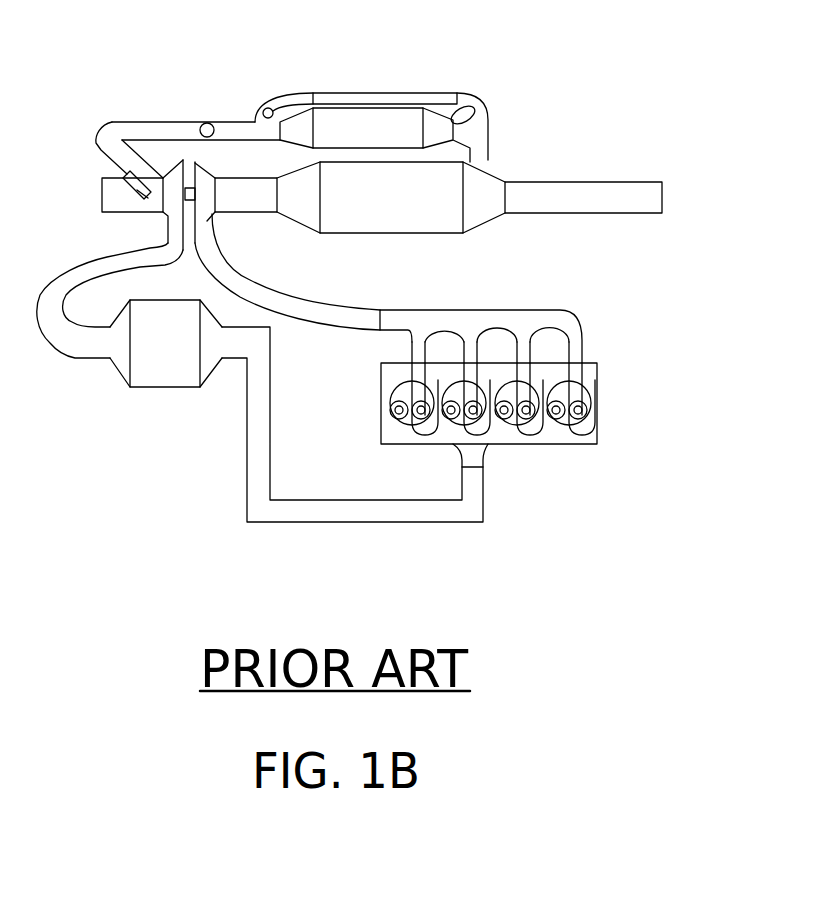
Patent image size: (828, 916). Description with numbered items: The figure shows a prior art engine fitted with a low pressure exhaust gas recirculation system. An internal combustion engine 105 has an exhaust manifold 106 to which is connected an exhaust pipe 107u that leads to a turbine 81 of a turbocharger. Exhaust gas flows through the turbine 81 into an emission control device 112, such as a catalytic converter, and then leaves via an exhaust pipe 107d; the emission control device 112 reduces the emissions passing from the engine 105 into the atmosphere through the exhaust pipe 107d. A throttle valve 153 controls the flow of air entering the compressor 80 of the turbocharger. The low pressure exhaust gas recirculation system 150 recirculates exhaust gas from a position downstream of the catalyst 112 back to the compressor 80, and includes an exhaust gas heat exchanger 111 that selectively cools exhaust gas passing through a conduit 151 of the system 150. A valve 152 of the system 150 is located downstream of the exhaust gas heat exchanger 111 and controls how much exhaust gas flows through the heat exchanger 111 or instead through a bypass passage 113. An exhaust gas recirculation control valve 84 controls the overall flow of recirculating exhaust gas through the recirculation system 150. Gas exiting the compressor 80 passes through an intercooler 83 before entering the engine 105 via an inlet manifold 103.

The compressor 80 is at (104, 124).
The turbine 81 is at (198, 160).
The intercooler 83 is at (110, 362).
The exhaust gas recirculation control valve 84 is at (207, 122).
The inlet manifold 103 is at (490, 448).
The internal combustion engine 105 is at (580, 446).
The exhaust manifold 106 is at (472, 311).
The exhaust pipe 107u is at (262, 294).
The exhaust pipe 107d is at (603, 215).
The exhaust gas heat exchanger 111 is at (458, 93).
The emission control device 112 is at (412, 207).
The bypass passage 113 is at (383, 92).
The low pressure exhaust gas recirculation system 150 is at (341, 76).
The conduit 151 is at (493, 148).
The valve 152 is at (265, 106).
The throttle valve 153 is at (135, 187).